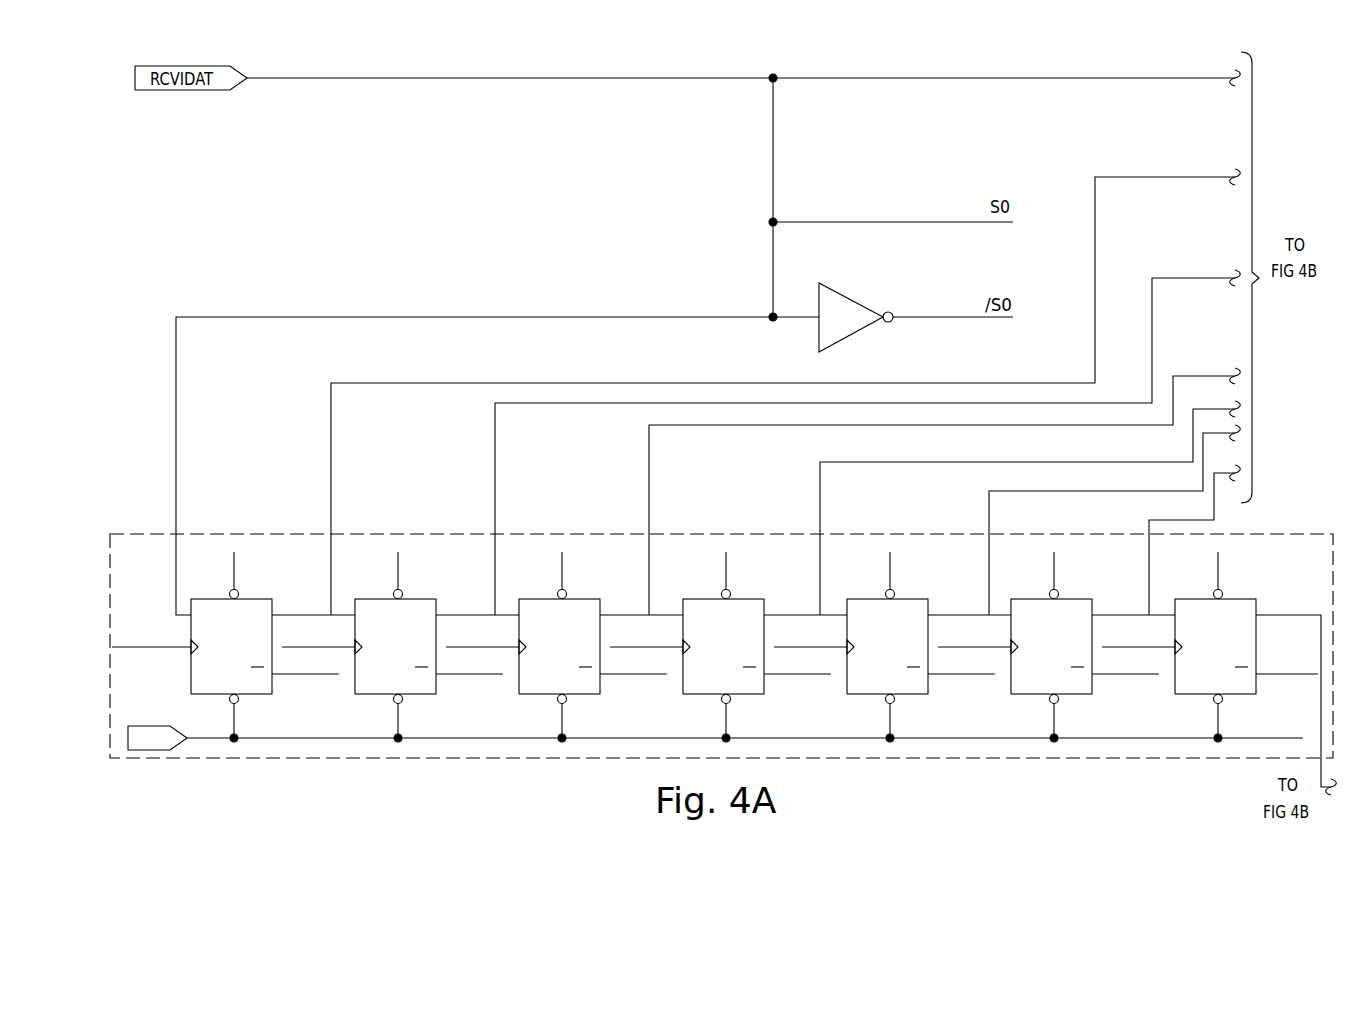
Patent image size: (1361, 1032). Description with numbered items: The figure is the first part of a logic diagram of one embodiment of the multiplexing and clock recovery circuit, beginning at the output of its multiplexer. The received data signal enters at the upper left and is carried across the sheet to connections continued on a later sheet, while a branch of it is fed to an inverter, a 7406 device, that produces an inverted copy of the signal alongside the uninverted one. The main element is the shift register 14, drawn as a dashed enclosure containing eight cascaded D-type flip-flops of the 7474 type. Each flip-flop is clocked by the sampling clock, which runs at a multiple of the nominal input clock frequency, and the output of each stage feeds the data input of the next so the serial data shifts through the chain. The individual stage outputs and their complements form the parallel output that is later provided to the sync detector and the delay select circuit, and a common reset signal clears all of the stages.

The shift register 14 is at (410, 534).
The inverter 7406 is at (893, 314).
The D flip-flop 7474 is at (715, 647).